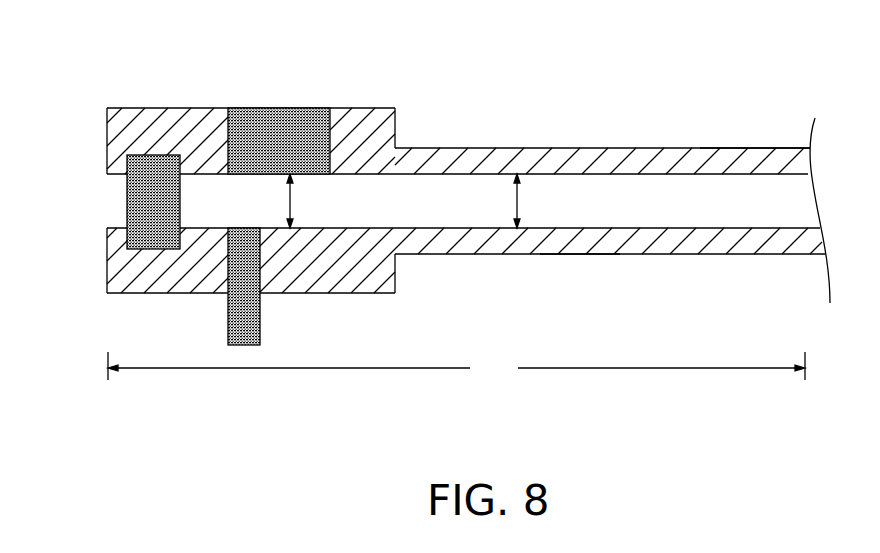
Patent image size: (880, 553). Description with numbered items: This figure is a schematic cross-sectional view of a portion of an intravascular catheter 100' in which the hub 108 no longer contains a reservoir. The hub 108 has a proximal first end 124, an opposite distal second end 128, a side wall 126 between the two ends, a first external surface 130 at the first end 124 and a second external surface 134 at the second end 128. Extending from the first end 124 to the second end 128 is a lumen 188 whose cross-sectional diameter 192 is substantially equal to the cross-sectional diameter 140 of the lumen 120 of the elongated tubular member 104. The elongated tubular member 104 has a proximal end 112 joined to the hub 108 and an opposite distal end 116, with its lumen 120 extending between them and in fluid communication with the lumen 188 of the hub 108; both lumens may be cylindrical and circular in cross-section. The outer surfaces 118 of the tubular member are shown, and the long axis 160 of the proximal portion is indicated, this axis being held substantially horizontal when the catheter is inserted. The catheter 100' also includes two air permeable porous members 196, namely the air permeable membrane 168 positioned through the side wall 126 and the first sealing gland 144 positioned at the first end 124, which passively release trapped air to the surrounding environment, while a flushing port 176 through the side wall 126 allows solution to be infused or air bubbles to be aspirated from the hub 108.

The intravascular catheter 100' is at (437, 203).
The elongated tubular member 104 is at (622, 148).
The hub 108 is at (385, 108).
The proximal end 112 is at (397, 257).
The distal end 116 is at (777, 270).
The outer surface 118 is at (745, 148).
The lumen 120 is at (650, 210).
The first end 124 is at (107, 292).
The side wall 126 is at (355, 108).
The second end 128 is at (395, 296).
The first external surface 130 is at (107, 130).
The second external surface 134 is at (397, 116).
The cross-sectional diameter 140 is at (537, 201).
The first sealing gland 144 is at (127, 212).
The long axis 160 is at (456, 367).
The air permeable membrane 168 is at (278, 108).
The flushing port 176 is at (228, 322).
The lumen 188 is at (242, 209).
The cross-sectional diameter 192 is at (310, 201).
The air permeable porous member 196 is at (147, 155).